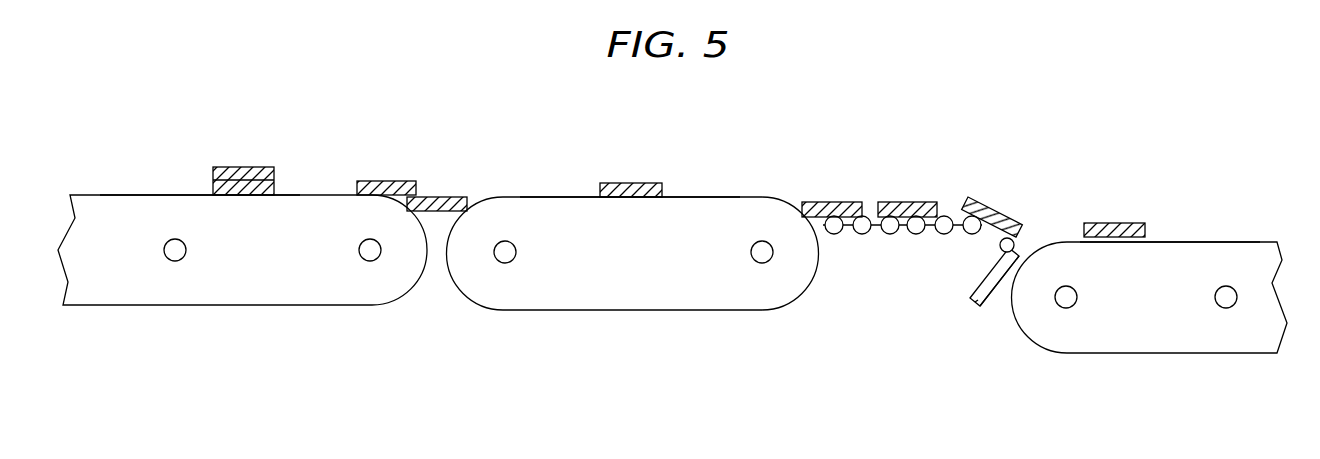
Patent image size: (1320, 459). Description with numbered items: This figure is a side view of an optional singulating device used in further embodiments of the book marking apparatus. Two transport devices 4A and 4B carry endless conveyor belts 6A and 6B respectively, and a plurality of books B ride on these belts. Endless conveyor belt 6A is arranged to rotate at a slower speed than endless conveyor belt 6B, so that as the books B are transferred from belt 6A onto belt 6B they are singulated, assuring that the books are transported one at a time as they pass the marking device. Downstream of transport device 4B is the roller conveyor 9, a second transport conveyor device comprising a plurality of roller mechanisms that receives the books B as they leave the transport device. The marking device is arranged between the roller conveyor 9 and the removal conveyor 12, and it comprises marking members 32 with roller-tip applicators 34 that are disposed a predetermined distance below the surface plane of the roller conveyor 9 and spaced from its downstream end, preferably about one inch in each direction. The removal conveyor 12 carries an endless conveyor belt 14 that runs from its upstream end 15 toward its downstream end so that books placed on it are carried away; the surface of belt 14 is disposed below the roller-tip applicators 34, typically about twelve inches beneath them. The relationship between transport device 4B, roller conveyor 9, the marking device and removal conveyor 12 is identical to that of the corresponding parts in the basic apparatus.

The transport device 4A is at (237, 293).
The endless conveyor belt 6A is at (158, 195).
The transport device 4B is at (635, 298).
The endless conveyor belt 6B is at (563, 197).
The books B is at (398, 181).
The roller conveyor 9 is at (873, 225).
The marking members 32 is at (988, 275).
The roller-tip applicators 34 is at (1013, 242).
The upstream end 15 is at (1003, 280).
The removal conveyor 12 is at (1120, 332).
The endless conveyor belt 14 is at (1187, 242).